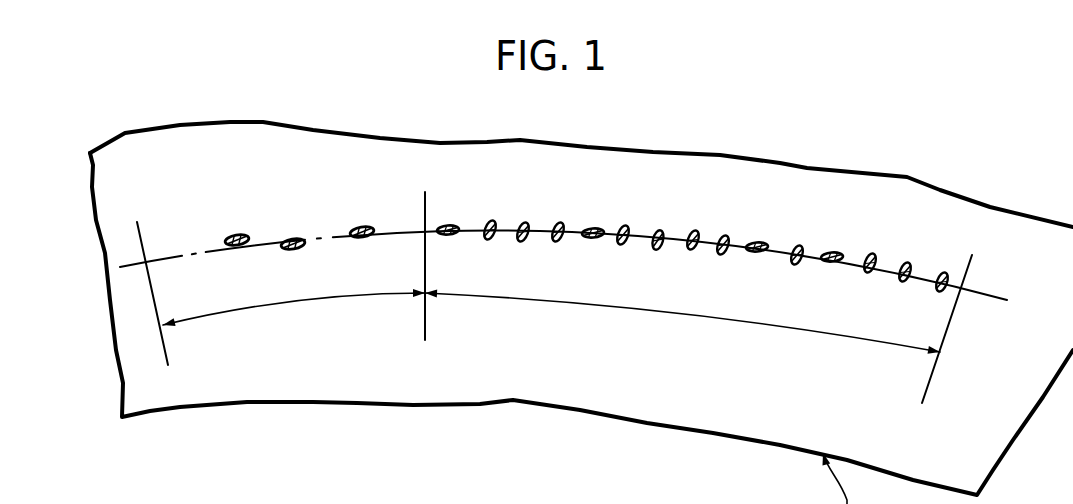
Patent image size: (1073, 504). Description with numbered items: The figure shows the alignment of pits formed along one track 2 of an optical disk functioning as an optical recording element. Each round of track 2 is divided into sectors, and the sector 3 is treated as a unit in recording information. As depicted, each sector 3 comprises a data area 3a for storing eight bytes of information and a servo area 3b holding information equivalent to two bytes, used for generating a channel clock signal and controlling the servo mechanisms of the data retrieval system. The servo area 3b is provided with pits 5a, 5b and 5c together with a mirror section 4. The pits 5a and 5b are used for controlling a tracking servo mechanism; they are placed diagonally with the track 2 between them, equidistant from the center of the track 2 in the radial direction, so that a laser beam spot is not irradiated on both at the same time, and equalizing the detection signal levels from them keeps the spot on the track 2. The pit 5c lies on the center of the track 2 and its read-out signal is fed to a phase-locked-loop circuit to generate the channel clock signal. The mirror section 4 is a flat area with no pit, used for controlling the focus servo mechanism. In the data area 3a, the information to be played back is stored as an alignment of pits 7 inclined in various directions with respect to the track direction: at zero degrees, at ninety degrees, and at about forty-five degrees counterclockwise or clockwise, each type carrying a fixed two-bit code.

The track 2 is at (975, 293).
The sector 3 is at (577, 175).
The data area 3a is at (738, 333).
The servo area 3b is at (357, 318).
The mirror section 4 is at (181, 253).
The pit 5a is at (237, 233).
The pit 5b is at (293, 238).
The pit 5c is at (367, 227).
The pits 7 is at (490, 221).